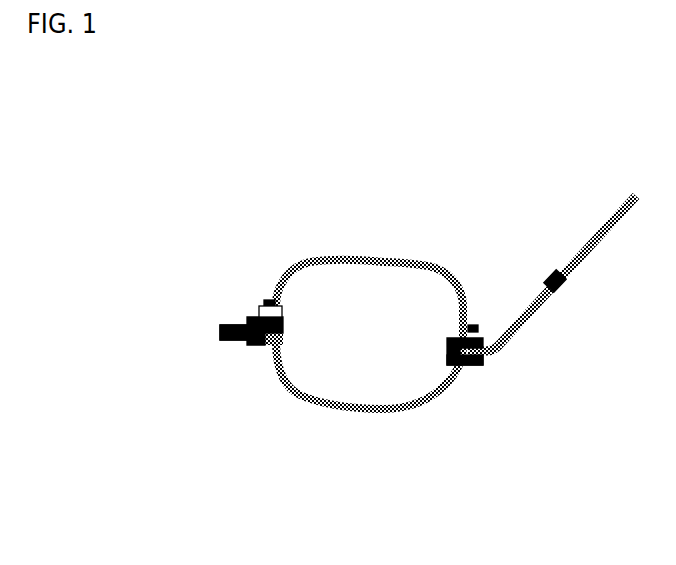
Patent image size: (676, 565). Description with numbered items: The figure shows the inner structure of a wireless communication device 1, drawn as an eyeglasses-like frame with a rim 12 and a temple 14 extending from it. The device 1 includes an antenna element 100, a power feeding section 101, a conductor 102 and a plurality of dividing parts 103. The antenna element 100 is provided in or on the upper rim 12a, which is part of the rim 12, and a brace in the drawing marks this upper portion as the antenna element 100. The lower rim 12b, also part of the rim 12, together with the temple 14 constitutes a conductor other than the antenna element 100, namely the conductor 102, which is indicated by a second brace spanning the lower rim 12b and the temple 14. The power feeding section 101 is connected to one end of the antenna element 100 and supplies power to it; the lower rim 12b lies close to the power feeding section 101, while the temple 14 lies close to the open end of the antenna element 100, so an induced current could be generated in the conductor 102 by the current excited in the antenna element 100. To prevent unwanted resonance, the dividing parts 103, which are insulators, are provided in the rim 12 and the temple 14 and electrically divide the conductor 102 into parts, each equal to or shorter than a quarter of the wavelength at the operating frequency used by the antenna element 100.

The wireless communication device 1 is at (553, 123).
The rim 12 is at (443, 470).
The upper rim 12a is at (347, 262).
The lower rim 12b is at (424, 406).
The temple 14 is at (528, 317).
The antenna element 100 is at (295, 396).
The power feeding section 101 is at (258, 312).
The conductor 102 is at (518, 369).
The dividing parts 103 is at (243, 342).